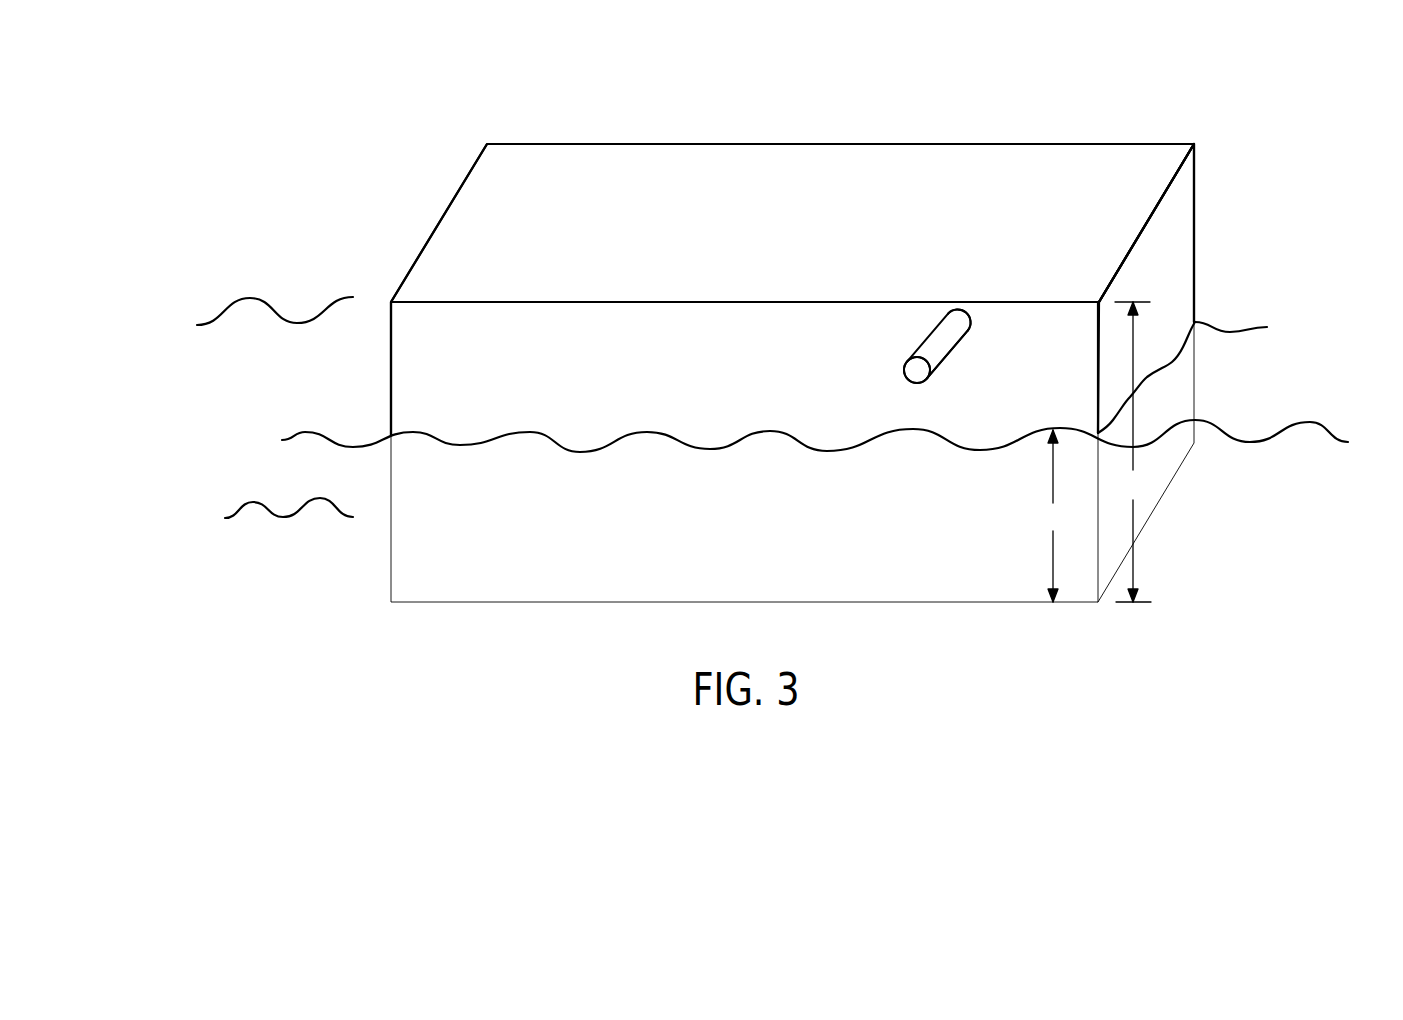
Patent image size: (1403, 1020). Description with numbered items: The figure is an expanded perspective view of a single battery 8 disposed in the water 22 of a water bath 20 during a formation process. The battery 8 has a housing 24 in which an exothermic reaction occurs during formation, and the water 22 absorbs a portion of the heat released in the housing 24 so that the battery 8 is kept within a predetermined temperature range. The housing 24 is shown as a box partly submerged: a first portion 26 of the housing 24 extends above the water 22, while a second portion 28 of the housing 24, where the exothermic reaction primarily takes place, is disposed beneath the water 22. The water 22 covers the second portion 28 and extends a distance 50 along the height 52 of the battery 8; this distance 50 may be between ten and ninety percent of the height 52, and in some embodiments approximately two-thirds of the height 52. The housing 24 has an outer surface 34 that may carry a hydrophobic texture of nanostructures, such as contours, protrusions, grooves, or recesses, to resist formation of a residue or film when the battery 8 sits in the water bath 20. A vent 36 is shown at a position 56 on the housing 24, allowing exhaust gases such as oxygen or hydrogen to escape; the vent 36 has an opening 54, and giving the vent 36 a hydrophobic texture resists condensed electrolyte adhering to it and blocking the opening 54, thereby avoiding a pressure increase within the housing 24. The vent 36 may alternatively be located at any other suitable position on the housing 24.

The battery 8 is at (1125, 93).
The water bath 20 is at (413, 120).
The water 22 is at (1302, 455).
The housing 24 is at (1117, 192).
The first portion 26 is at (1163, 248).
The second portion 28 is at (1160, 457).
The outer surface 34 is at (430, 360).
The vent 36 is at (927, 337).
The distance 50 is at (1053, 516).
The height 52 is at (1133, 452).
The opening 54 is at (920, 363).
The position 56 is at (975, 318).